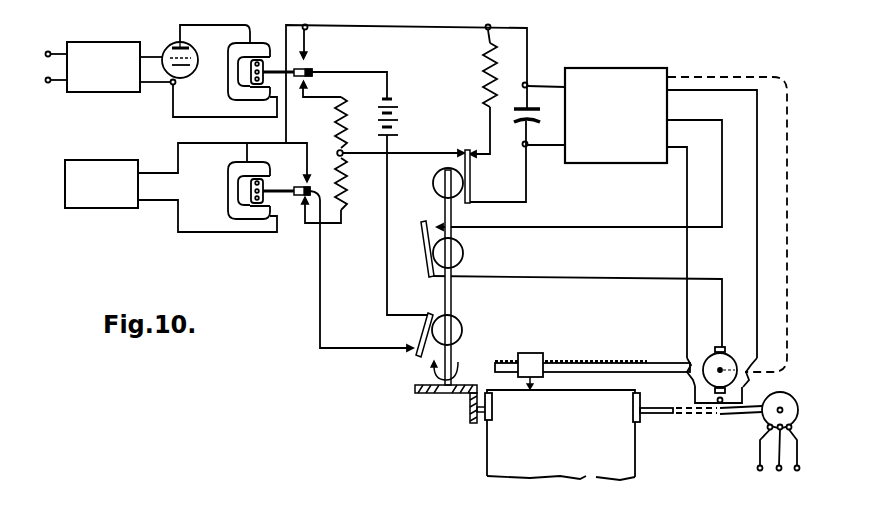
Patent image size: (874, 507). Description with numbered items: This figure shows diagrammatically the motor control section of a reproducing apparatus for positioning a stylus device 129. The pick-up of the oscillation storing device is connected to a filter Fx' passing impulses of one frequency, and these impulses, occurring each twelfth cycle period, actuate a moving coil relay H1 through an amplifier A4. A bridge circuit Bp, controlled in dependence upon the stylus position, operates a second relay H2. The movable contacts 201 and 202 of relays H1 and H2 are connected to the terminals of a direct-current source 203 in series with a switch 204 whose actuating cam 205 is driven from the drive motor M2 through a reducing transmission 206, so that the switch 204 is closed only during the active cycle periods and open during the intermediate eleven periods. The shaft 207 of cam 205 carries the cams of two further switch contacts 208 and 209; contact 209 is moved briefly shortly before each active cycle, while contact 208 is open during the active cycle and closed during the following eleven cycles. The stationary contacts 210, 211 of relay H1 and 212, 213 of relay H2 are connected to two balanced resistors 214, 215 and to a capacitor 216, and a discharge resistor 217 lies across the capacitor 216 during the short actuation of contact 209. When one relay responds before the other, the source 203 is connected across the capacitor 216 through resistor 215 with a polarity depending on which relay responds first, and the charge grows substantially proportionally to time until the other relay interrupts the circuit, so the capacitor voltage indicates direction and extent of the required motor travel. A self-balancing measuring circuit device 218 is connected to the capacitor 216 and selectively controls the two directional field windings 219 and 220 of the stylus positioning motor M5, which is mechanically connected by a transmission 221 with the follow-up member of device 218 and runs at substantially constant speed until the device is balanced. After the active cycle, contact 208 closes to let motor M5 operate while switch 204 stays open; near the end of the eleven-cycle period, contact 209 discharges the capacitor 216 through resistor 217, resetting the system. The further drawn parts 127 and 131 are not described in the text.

The amplifier A4 is at (179, 52).
The moving coil relay H1 is at (232, 82).
The filter Fx' is at (103, 78).
The relay H2 is at (232, 195).
The bridge circuit Bp is at (103, 209).
The movable contact 201 is at (314, 68).
The stationary contact 211 is at (307, 58).
The stationary contact 210 is at (307, 84).
The balanced resistor 214 is at (342, 126).
The stationary contact 213 is at (326, 155).
The balanced resistor 215 is at (348, 186).
The direct-current source 203 is at (395, 125).
The discharge resistor 217 is at (486, 90).
The capacitor 216 is at (520, 124).
The measuring circuit device 218 is at (628, 73).
The transmission 221 is at (783, 320).
The movable contact 202 is at (302, 186).
The stationary contact 212 is at (304, 205).
The shaft 207 is at (452, 300).
The switch contact 209 is at (468, 192).
The switch contact 208 is at (418, 234).
The actuating cam 205 is at (455, 338).
The switch 204 is at (426, 328).
The reducing transmission 206 is at (446, 387).
The roll of material 127 is at (638, 422).
The rack 131 is at (575, 363).
The stylus device 129 is at (528, 354).
The stylus positioning motor M5 is at (715, 341).
The directional control field winding 219 is at (686, 362).
The directional control field winding 220 is at (750, 378).
The drive motor M2 is at (768, 428).